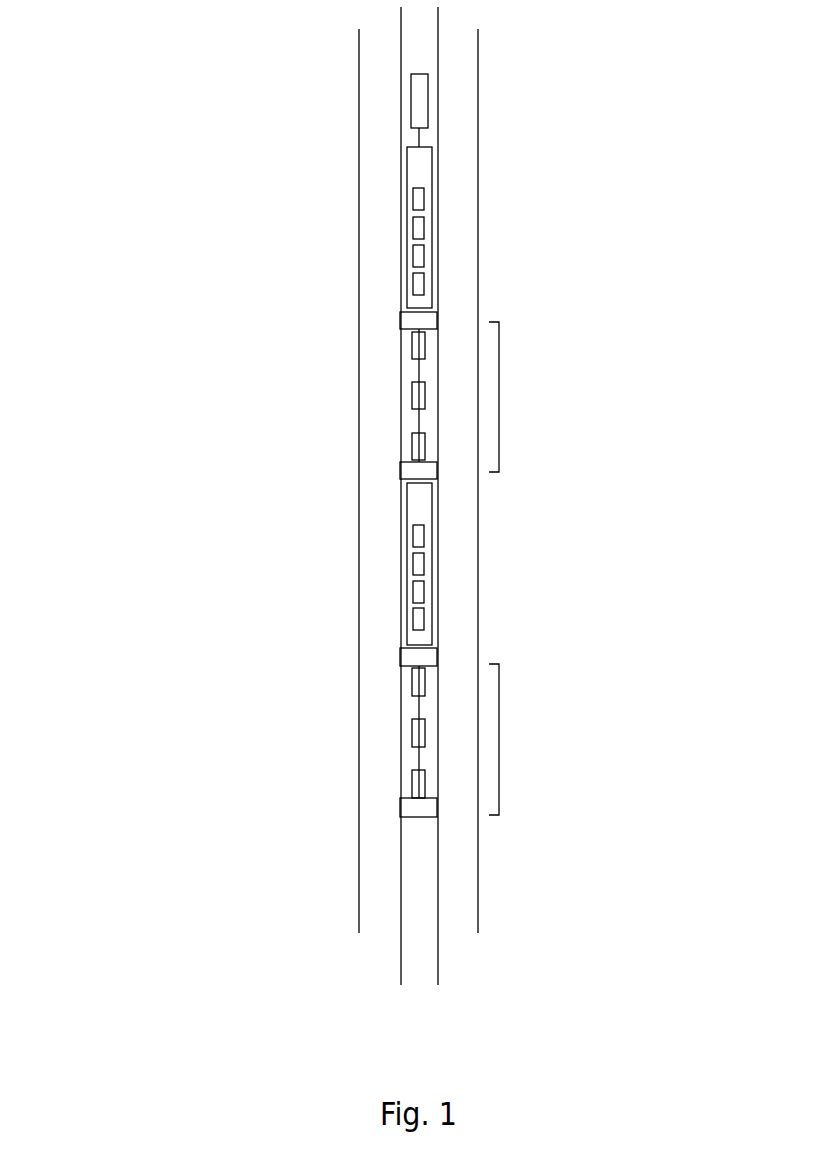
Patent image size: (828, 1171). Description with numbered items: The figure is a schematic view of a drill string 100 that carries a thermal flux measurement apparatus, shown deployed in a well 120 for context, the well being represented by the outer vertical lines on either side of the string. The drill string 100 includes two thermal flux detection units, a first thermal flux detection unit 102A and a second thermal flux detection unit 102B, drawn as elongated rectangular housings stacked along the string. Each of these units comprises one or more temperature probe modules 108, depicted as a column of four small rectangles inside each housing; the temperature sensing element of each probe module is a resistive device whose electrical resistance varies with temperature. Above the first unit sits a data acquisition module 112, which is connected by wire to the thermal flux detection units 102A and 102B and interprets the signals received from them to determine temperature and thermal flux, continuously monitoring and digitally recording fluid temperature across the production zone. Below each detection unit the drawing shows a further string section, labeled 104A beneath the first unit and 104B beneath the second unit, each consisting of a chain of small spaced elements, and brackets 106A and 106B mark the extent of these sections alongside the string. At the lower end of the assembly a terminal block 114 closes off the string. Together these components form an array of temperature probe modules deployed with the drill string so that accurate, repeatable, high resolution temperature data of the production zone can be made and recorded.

The drill string 100 is at (194, 46).
The first thermal flux detection unit 102A is at (396, 227).
The second thermal flux detection unit 102B is at (407, 574).
The tool section with spaced components 104A is at (407, 397).
The tool section with spaced components 104B is at (407, 732).
The tool string section 106A is at (499, 396).
The tool string section 106B is at (499, 740).
The temperature probe module 108 is at (422, 211).
The data acquisition module 112 is at (428, 101).
The bottom sub 114 is at (400, 807).
The well 120 is at (478, 880).